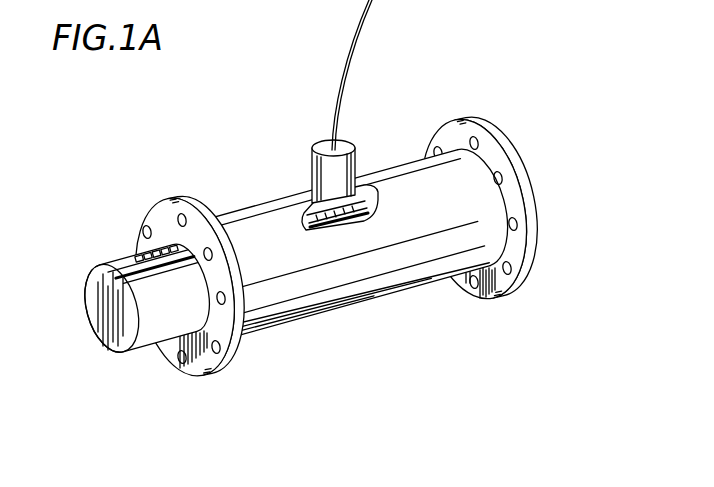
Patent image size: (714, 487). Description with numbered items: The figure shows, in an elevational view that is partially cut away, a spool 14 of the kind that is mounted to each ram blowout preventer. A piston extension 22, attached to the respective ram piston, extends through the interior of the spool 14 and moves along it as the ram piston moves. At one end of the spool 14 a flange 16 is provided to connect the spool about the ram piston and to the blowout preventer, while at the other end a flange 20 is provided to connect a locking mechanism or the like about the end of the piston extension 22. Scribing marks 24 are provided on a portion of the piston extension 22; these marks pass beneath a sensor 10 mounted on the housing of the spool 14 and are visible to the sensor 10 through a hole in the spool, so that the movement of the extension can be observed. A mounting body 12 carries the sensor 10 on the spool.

The sensor 10 is at (311, 226).
The sensor unit 12 is at (356, 166).
The spool 14 is at (420, 308).
The flange 16 is at (488, 154).
The flange 20 is at (203, 363).
The piston extension 22 is at (125, 278).
The scribing marks 24 is at (158, 252).